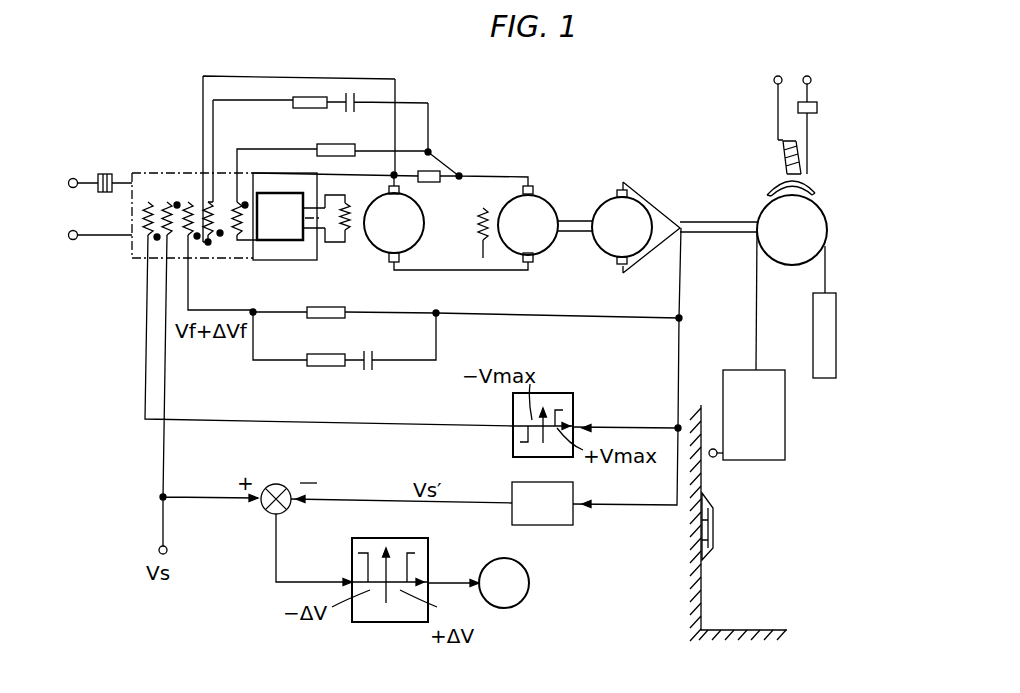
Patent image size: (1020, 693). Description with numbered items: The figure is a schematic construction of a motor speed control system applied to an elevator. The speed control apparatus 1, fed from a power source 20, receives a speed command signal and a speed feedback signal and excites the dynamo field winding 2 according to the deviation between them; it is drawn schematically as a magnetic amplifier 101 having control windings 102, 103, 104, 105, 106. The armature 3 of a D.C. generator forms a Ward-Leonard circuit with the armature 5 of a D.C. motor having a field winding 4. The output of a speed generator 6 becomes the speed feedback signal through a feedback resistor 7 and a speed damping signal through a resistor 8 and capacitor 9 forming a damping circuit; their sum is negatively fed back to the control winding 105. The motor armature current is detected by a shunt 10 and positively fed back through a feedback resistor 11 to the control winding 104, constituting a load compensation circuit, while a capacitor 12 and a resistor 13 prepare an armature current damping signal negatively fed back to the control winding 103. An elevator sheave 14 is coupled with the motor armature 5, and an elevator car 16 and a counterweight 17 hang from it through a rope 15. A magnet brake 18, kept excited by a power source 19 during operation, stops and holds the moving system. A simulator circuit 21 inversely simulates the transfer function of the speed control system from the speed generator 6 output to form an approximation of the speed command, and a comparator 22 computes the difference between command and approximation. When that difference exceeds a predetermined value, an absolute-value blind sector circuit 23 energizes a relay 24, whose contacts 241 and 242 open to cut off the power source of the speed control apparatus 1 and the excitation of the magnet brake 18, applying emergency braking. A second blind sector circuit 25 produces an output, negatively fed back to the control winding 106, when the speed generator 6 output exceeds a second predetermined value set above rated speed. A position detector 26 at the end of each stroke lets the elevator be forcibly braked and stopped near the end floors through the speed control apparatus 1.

The speed control apparatus 1 is at (132, 172).
The dynamo field winding 2 is at (350, 233).
The armature of D.C. generator 3 is at (424, 208).
The field winding 4 is at (477, 232).
The armature of D.C. motor 5 is at (548, 194).
The speed generator 6 is at (646, 198).
The feedback resistor 7 is at (347, 308).
The resistor 8 is at (322, 368).
The capacitor 9 is at (364, 372).
The shunt 10 is at (432, 171).
The feedback resistor 11 is at (327, 143).
The capacitor 12 is at (357, 105).
The resistor 13 is at (293, 105).
The elevator sheave 14 is at (818, 222).
The rope 15 is at (757, 289).
The elevator car 16 is at (785, 432).
The counterweight 17 is at (836, 325).
The magnet brake 18 is at (812, 169).
The power source 19 is at (792, 91).
The power source 20 is at (90, 209).
The simulator circuit 21 is at (565, 526).
The comparator 22 is at (283, 483).
The absolute-value blind sector circuit 23 is at (383, 623).
The relay 24 is at (512, 607).
The second blind sector circuit 25 is at (542, 392).
The position detector 26 is at (714, 514).
The magnetic amplifier 101 is at (287, 242).
The control winding 102 is at (167, 202).
The control winding 103 is at (208, 244).
The control winding 104 is at (235, 242).
The control winding 105 is at (188, 202).
The control winding 106 is at (148, 228).
The contact 241 is at (98, 177).
The contact 242 is at (815, 114).